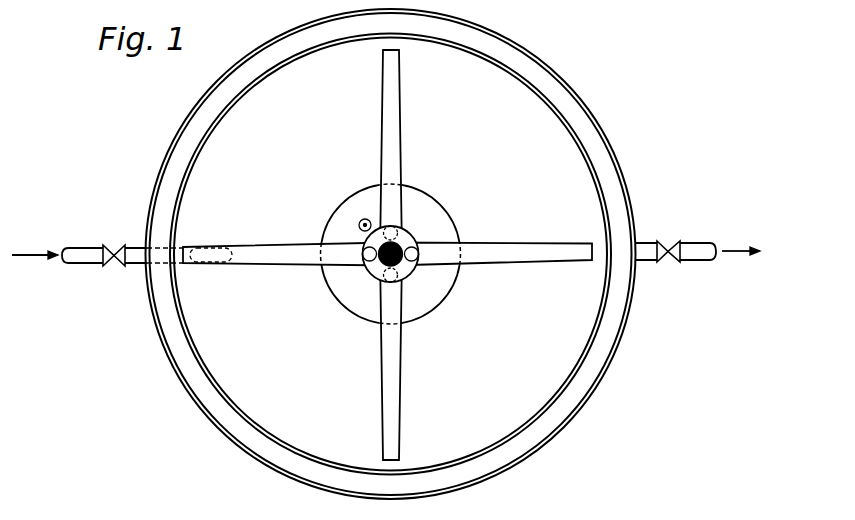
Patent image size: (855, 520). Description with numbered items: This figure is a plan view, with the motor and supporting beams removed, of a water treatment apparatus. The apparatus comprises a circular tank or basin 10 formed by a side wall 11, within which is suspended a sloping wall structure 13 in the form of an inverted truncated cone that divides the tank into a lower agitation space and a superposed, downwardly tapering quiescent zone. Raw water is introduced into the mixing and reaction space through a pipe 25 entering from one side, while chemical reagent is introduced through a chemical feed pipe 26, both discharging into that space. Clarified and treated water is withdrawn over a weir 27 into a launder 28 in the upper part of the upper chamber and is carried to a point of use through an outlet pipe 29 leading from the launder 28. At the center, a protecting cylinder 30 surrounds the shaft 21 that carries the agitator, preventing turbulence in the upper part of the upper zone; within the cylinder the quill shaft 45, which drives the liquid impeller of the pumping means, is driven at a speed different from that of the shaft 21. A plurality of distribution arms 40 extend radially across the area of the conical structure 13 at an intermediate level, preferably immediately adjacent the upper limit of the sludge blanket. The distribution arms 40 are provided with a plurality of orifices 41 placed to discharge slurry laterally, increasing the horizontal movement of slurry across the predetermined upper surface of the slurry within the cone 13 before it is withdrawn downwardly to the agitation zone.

The tank or basin 10 is at (505, 63).
The side wall 11 is at (628, 178).
The sloping wall structure 13 is at (223, 362).
The shaft 21 is at (367, 243).
The pipe 25 is at (78, 252).
The chemical feed pipe 26 is at (361, 220).
The weir 27 is at (565, 117).
The launder 28 is at (605, 155).
The outlet pipe 29 is at (694, 247).
The protecting cylinder 30 is at (402, 262).
The distribution arms 40 is at (394, 103).
The orifices 41 is at (412, 246).
The quill shaft 45 is at (375, 270).